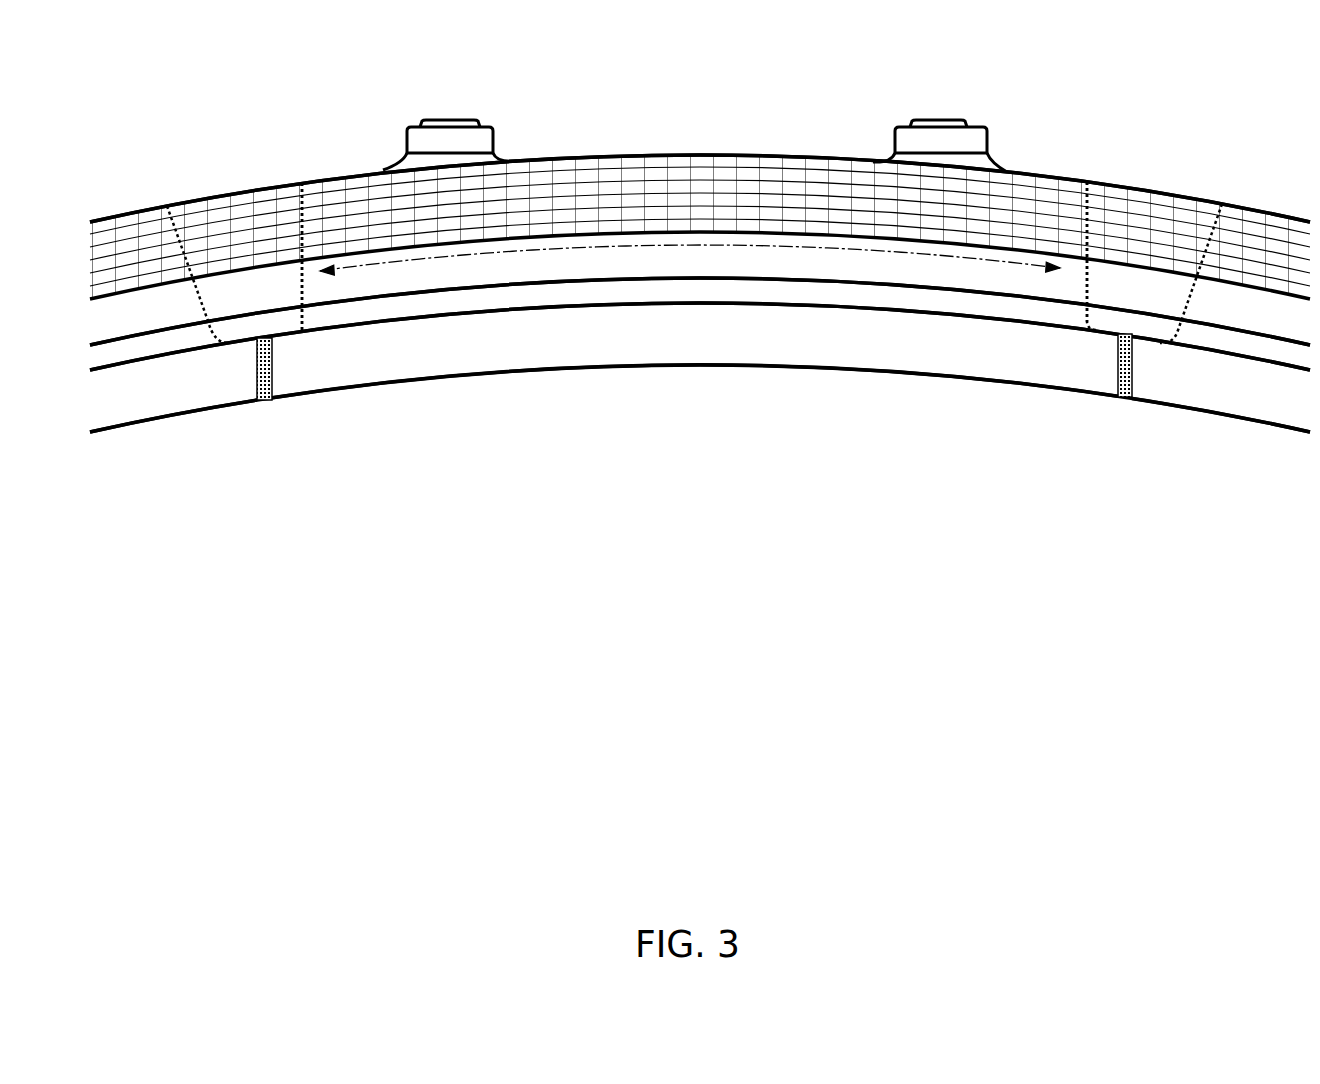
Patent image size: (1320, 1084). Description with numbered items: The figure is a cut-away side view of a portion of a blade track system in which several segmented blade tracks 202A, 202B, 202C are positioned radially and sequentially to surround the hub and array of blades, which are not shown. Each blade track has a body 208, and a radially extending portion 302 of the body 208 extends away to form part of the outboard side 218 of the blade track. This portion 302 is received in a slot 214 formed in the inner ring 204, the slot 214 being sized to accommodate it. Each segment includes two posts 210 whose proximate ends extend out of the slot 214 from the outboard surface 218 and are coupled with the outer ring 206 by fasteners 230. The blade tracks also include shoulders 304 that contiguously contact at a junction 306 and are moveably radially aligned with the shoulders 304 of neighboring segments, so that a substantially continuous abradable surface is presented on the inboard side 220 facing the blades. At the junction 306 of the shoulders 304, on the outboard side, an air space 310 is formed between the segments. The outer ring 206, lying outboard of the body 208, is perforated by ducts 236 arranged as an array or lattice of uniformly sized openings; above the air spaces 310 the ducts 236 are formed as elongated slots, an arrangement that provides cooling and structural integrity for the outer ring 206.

The segmented blade track 202A is at (150, 418).
The segmented blade track 202B is at (715, 350).
The segmented blade track 202C is at (1138, 390).
The inner ring 204 is at (269, 305).
The outer ring 206 is at (604, 149).
The body 208 is at (652, 340).
The posts 210 is at (452, 118).
The slot 214 is at (628, 246).
The outboard side 218 is at (808, 303).
The inboard side 220 is at (995, 387).
The fasteners 230 is at (405, 138).
The ducts 236 is at (750, 168).
The radially extending portion 302 is at (478, 293).
The shoulders 304 is at (238, 387).
The junction 306 is at (263, 412).
The air space 310 is at (243, 332).